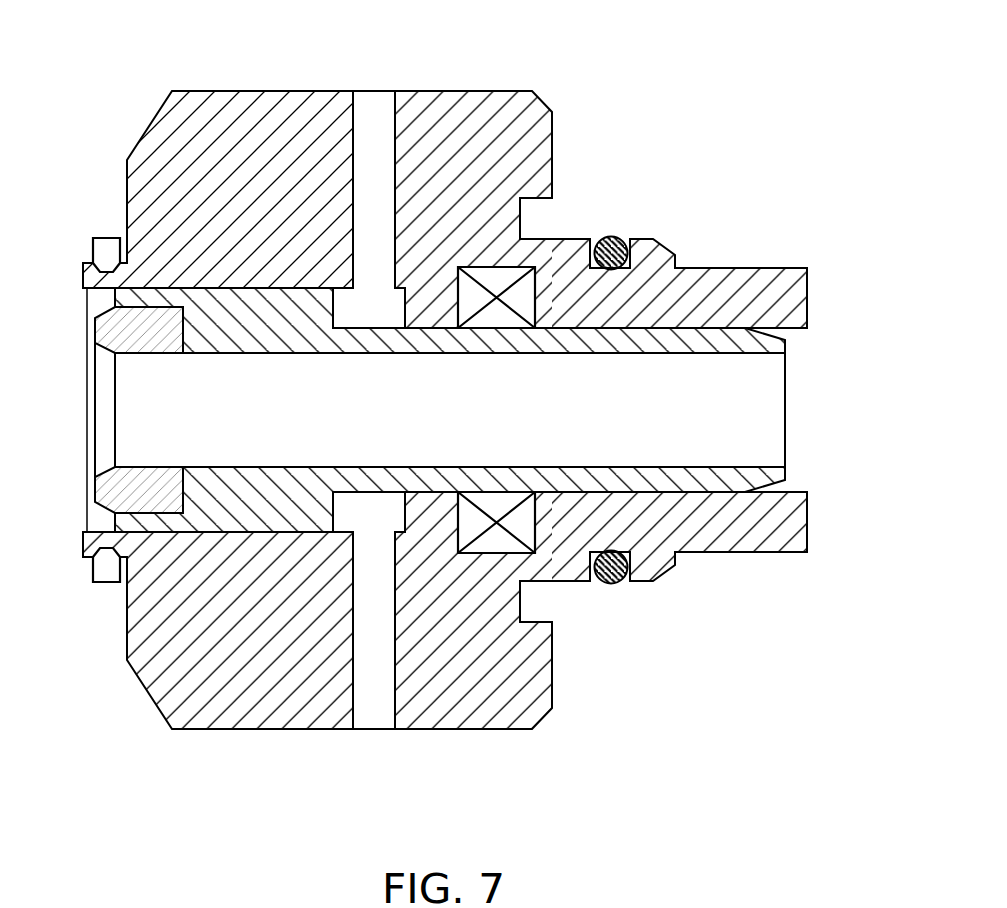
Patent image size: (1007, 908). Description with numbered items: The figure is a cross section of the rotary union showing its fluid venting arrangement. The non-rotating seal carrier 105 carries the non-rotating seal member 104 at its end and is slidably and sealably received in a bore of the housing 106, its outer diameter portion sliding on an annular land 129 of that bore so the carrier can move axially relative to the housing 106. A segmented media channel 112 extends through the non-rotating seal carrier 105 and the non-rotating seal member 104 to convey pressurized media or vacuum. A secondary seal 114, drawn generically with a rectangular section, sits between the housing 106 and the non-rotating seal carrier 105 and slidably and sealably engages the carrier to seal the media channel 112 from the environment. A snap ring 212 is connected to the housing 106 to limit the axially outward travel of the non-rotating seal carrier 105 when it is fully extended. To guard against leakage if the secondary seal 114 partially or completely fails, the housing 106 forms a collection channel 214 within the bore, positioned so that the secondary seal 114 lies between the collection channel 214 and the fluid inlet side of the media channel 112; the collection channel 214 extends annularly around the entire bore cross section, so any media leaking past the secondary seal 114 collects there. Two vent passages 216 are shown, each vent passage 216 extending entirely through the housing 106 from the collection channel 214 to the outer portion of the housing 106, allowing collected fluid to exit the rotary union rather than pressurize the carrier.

The non-rotating seal member 104 is at (146, 338).
The non-rotating seal carrier 105 is at (687, 335).
The housing 106 is at (540, 135).
The media channel 112 is at (481, 424).
The secondary seal 114 is at (485, 522).
The land 129 is at (790, 488).
The snap ring 212 is at (107, 250).
The collection channel 214 is at (358, 307).
The vent passage 216 is at (388, 103).